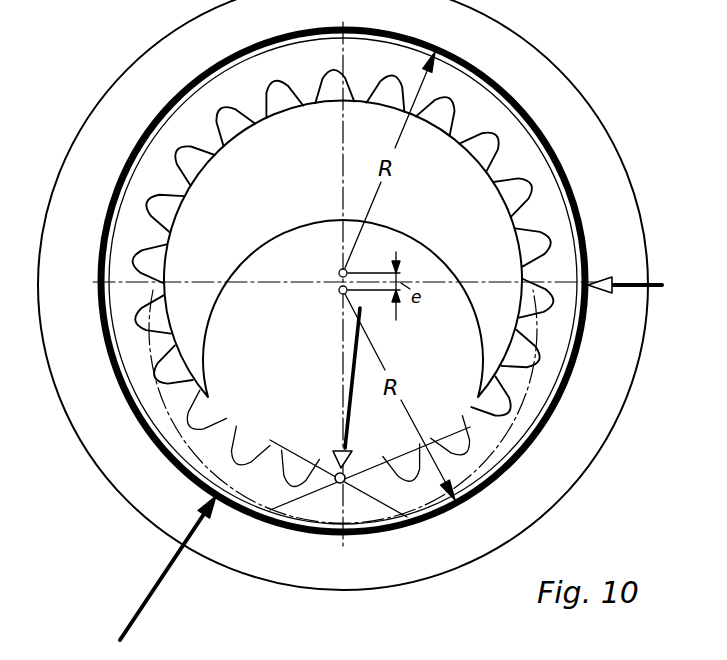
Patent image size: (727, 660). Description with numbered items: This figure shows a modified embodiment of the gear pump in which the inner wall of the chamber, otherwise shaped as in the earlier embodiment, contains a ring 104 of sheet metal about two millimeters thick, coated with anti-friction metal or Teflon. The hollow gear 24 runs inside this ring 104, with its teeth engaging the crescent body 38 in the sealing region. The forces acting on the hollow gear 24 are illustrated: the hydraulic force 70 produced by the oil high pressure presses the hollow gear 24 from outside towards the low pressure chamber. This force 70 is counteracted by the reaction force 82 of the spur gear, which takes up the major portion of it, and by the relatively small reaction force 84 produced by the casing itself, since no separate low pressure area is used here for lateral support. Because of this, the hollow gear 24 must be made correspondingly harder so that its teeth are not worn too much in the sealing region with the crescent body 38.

The crescent body 38 is at (343, 278).
The ring 104 is at (584, 256).
The hollow gear 24 is at (248, 497).
The reaction force 84 is at (632, 290).
The reaction force 82 is at (353, 446).
The force 70 is at (172, 578).